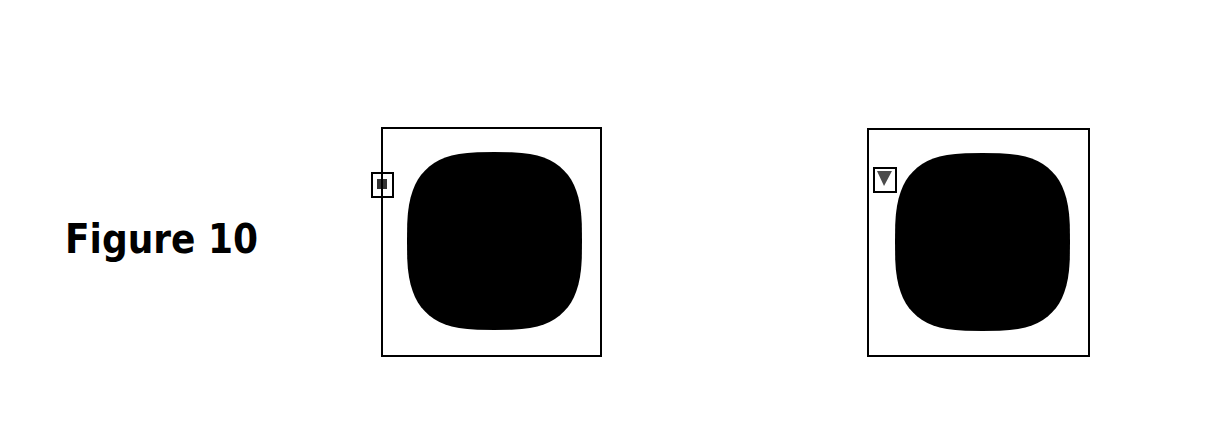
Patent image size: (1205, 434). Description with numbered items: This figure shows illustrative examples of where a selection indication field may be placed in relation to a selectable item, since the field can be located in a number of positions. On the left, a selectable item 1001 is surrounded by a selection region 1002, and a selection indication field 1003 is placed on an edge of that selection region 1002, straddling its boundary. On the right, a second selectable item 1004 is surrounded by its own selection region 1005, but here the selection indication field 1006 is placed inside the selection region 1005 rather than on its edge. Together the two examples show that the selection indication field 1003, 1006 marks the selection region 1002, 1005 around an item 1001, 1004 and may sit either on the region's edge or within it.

The item 1001 is at (532, 160).
The selection region 1002 is at (425, 130).
The selection indication field 1003 is at (367, 178).
The item 1004 is at (1032, 168).
The selection region 1005 is at (962, 127).
The selection indication field 1006 is at (882, 173).